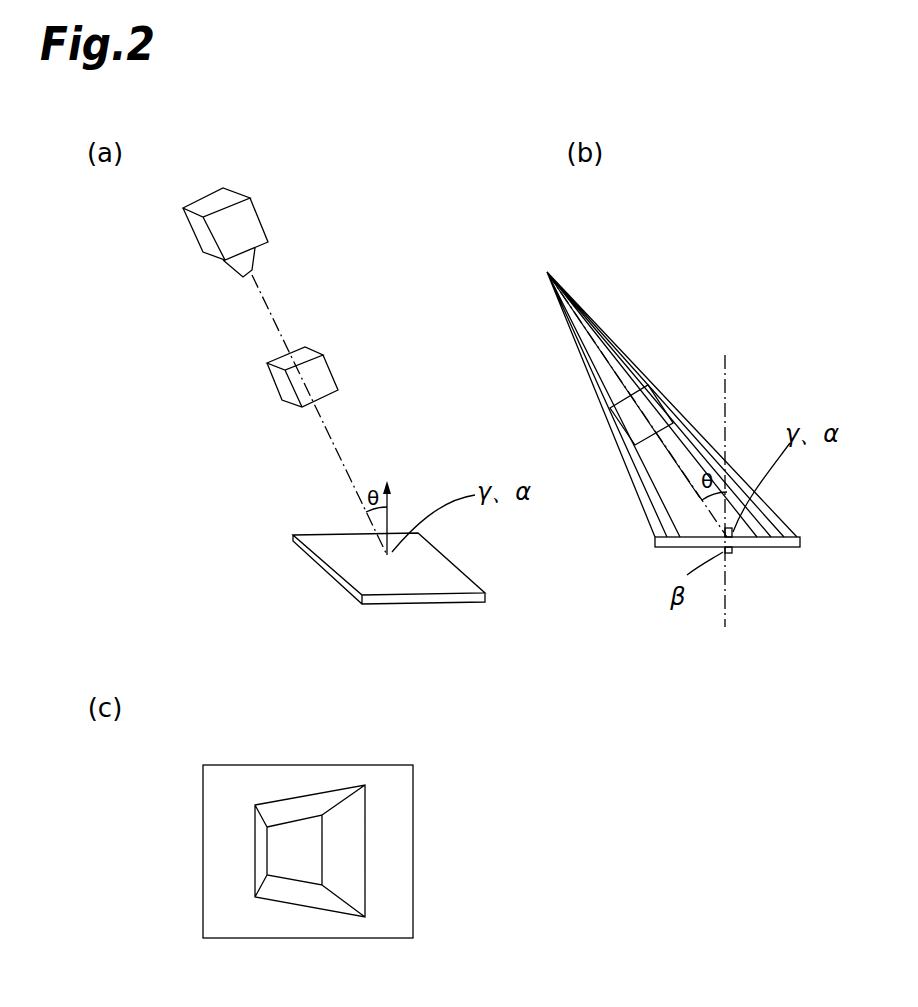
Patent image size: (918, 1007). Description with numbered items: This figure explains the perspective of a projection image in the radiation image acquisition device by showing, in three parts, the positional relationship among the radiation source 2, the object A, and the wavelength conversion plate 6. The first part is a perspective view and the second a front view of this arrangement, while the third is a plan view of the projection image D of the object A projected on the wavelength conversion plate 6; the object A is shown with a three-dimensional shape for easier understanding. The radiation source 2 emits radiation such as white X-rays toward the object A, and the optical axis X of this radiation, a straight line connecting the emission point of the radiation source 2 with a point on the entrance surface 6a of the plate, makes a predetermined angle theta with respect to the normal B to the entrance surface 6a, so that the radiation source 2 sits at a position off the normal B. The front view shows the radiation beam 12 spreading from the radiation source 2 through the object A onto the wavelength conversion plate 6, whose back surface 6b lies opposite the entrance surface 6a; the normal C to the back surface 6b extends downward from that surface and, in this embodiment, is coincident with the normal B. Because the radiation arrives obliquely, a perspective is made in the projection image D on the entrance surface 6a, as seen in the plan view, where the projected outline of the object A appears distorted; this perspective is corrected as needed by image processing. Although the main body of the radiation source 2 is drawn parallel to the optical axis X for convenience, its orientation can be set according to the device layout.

The radiation source 2 is at (262, 218).
The wavelength conversion plate 6 is at (490, 603).
The entrance surface 6a is at (440, 568).
The back surface 6b is at (747, 548).
The radiation beam 12 is at (732, 527).
The object A is at (333, 377).
The normal to the entrance surface B is at (390, 520).
The normal to the back surface C is at (728, 620).
The projection image D is at (300, 795).
The optical axis X is at (260, 298).